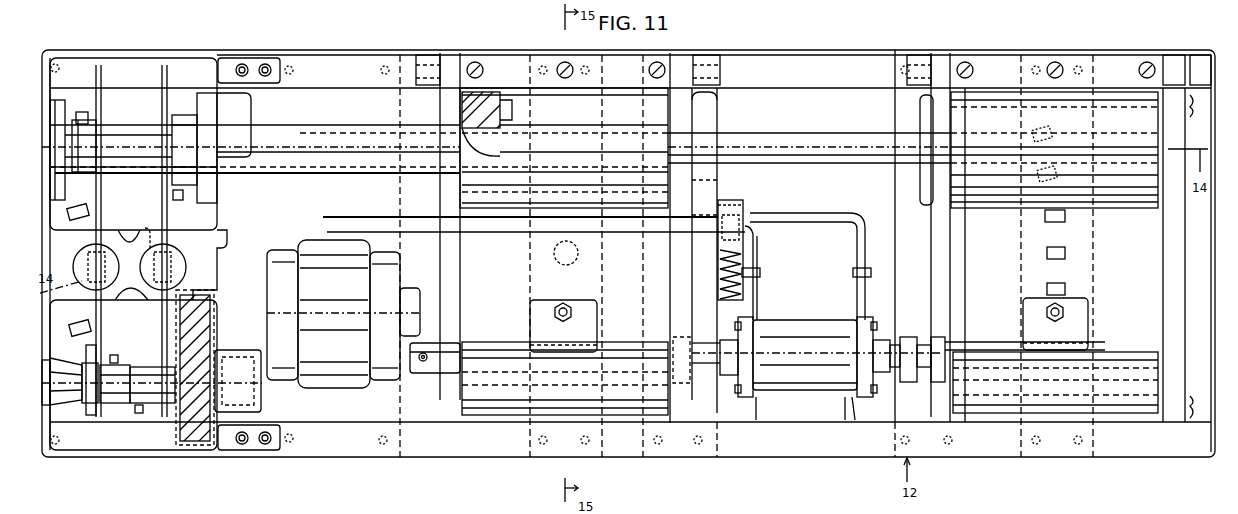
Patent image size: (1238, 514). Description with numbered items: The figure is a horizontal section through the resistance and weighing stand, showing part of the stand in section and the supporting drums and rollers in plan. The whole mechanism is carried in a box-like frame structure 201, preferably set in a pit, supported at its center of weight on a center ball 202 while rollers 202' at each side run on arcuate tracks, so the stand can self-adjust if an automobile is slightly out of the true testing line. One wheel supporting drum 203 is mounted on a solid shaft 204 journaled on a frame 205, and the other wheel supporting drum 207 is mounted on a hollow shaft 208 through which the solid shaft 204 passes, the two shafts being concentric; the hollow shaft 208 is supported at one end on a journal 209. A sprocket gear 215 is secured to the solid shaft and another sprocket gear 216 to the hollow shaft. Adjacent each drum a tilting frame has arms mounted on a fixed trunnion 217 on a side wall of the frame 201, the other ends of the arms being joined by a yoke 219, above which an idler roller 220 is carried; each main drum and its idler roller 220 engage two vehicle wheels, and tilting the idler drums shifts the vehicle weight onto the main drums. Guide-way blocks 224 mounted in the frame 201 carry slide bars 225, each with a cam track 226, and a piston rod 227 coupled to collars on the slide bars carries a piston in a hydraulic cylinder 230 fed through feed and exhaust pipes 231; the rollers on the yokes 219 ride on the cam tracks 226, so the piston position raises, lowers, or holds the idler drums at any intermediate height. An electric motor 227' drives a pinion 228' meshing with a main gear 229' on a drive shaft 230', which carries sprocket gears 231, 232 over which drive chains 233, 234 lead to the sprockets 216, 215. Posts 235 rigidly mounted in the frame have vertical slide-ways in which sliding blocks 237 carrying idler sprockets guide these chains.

The box-like frame structure 201 is at (1208, 455).
The center ball 202 is at (596, 253).
The rollers 202' is at (605, 203).
The wheel supporting drum 203 is at (655, 124).
The solid shaft 204 is at (780, 165).
The frame 205 is at (922, 196).
The wheel supporting drum 207 is at (980, 114).
The hollow shaft 208 is at (342, 174).
The journal 209 is at (702, 125).
The sprocket gear 215 is at (97, 85).
The sprocket gear 216 is at (168, 82).
The fixed trunnion 217 is at (452, 62).
The yoke 219 is at (455, 273).
The idler roller 220 is at (506, 410).
The guide-way blocks 224 is at (535, 322).
The slide bars 225 is at (425, 378).
The cam track 226 is at (434, 360).
The piston rod 227 is at (809, 410).
The electric motor 227' is at (343, 363).
The pinion 228' is at (152, 375).
The main gear 229' is at (195, 389).
The hydraulic cylinder 230 is at (798, 357).
The drive shaft 230' is at (263, 381).
The feed and exhaust pipes 231 is at (830, 214).
The sprocket gear 232 is at (78, 482).
The drive chain 233 is at (98, 418).
The drive chain 234 is at (168, 212).
The posts 235 is at (148, 230).
The sliding blocks 237 is at (195, 256).